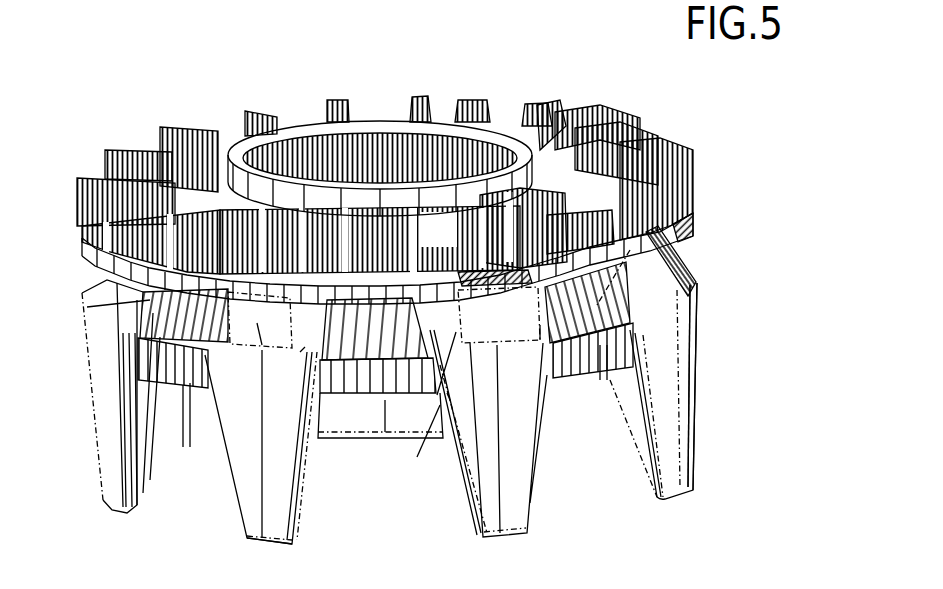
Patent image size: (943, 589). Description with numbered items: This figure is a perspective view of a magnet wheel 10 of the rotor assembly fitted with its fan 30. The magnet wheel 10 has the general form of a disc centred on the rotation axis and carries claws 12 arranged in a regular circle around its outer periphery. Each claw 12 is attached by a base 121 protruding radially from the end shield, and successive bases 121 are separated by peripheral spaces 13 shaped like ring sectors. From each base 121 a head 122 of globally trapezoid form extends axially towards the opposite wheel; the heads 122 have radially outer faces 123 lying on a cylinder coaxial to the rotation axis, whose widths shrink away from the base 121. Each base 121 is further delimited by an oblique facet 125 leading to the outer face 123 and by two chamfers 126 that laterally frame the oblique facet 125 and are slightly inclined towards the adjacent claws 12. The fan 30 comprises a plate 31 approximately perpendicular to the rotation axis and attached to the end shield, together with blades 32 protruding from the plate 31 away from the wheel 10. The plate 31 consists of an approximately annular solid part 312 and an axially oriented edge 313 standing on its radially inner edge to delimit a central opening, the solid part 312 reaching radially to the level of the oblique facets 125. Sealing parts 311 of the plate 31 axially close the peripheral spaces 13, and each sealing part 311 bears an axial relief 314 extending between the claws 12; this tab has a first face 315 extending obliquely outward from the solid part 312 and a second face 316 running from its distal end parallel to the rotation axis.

The magnet wheel 10 is at (422, 393).
The claw 12 is at (681, 403).
The peripheral space 13 is at (358, 395).
The fan 30 is at (416, 167).
The plate 31 is at (128, 255).
The blade 32 is at (247, 119).
The base 121 is at (680, 250).
The head 122 is at (681, 363).
The radially outer face 123 is at (248, 498).
The oblique facet 125 is at (257, 323).
The chamfer 126 is at (305, 347).
The sealing part 311 is at (377, 188).
The solid part 312 is at (430, 160).
The edge 313 is at (411, 123).
The axial relief 314 is at (140, 317).
The first face 315 is at (140, 480).
The second face 316 is at (188, 383).